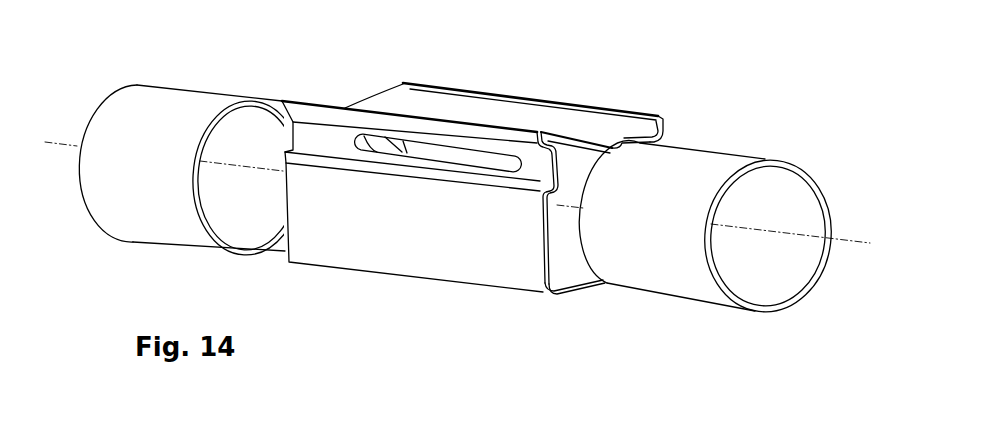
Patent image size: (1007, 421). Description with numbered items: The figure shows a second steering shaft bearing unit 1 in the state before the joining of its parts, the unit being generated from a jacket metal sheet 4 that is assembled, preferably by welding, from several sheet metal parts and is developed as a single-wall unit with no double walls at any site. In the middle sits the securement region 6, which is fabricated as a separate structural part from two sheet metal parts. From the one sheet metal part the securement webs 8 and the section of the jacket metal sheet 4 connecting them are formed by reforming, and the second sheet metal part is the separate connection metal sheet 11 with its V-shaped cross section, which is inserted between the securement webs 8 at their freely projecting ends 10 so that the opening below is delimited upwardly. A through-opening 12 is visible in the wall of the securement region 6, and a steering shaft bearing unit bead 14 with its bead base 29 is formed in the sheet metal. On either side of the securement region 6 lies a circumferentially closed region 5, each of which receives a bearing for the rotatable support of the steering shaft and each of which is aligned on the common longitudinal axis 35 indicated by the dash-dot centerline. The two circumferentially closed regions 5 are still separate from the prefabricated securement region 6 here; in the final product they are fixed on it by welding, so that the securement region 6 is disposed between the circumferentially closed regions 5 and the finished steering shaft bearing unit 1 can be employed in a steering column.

The steering shaft bearing unit 1 is at (749, 147).
The jacket metal sheet 4 is at (528, 280).
The circumferentially closed region 5 is at (195, 112).
The securement region 6 is at (477, 190).
The securement web 8 is at (342, 182).
The freely projecting end 10 is at (387, 112).
The separate metal sheet 11 is at (493, 113).
The through-opening 12 is at (428, 152).
The steering shaft bearing unit bead 14 is at (310, 137).
The bead base 29 is at (533, 163).
The longitudinal axis 35 is at (777, 232).